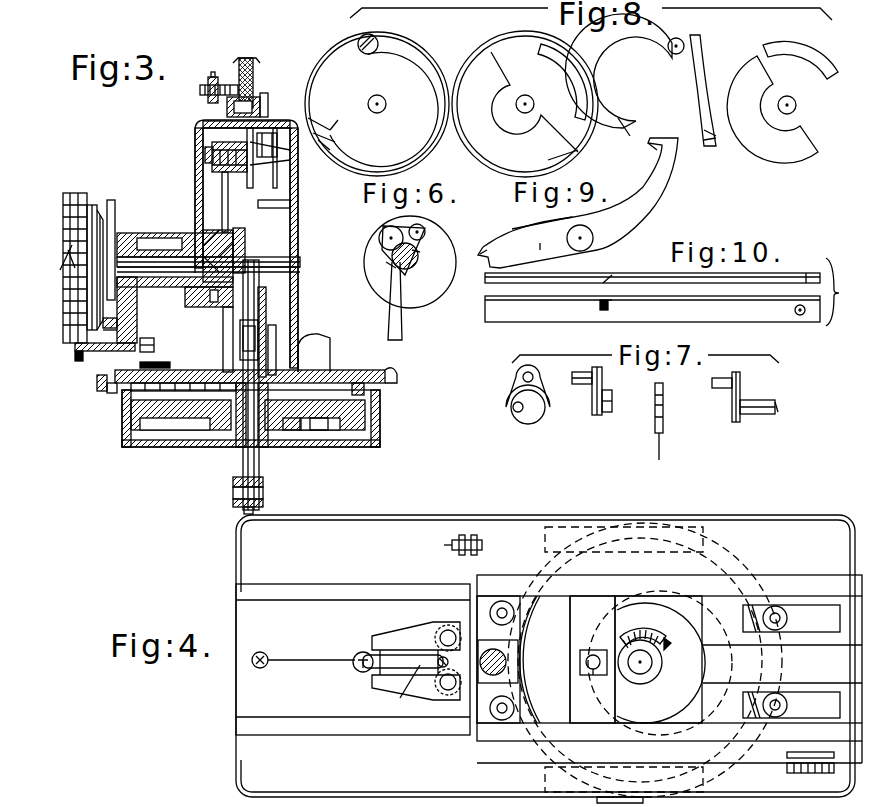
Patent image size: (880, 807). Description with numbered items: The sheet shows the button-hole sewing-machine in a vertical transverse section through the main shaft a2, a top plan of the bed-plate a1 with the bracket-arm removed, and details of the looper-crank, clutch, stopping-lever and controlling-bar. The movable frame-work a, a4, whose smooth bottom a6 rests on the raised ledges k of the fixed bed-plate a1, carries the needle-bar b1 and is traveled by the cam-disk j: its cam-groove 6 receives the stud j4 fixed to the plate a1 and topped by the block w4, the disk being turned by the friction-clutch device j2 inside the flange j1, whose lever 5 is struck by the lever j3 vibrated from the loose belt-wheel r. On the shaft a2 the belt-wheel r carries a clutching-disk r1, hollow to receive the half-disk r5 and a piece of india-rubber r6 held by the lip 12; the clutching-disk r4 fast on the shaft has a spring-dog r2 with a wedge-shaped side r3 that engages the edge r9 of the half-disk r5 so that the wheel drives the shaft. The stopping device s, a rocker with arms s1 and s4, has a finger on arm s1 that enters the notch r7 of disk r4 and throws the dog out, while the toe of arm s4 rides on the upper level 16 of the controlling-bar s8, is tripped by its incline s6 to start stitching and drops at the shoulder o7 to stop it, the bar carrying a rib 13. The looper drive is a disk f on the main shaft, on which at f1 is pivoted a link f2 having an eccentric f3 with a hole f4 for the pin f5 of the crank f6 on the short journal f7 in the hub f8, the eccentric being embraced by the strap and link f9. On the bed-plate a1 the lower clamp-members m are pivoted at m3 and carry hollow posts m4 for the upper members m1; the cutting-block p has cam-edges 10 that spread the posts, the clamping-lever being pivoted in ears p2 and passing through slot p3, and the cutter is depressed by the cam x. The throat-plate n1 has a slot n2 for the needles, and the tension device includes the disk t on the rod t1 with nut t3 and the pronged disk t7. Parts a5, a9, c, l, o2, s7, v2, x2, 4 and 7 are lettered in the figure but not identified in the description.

In FIG. 3, the main frame-work a is at (256, 246).
In FIG. 3, the bed-plate a1 is at (392, 376).
In FIG. 4, the bed-plate a1 is at (545, 659).
In FIG. 3, the main shaft a2 is at (208, 288).
In FIG. 3, the movable frame part a4 is at (145, 447).
In FIG. 3, the central spindle a5 is at (228, 440).
In FIG. 4, the central spindle a5 is at (656, 672).
In FIG. 3, the bottom part of frame a6 is at (96, 382).
In FIG. 4, the bottom part of frame a6 is at (503, 601).
In FIG. 4, the guide screw a9 is at (787, 618).
In FIG. 3, the needle-bar b1 is at (250, 73).
In FIG. 3, the gear shaft c is at (215, 190).
In FIG. 3, the hub block l is at (205, 232).
In FIG. 3, the disk f is at (222, 298).
In FIG. 6, the disk f is at (410, 262).
In FIG. 6, the pivot f1 is at (425, 232).
In FIG. 7, the link f2 is at (512, 386).
In FIG. 6, the link f2 is at (380, 236).
In FIG. 7, the eccentric f3 is at (520, 425).
In FIG. 6, the eccentric f3 is at (388, 264).
In FIG. 3, the hole f4 is at (266, 290).
In FIG. 7, the hole f4 is at (512, 408).
In FIG. 7, the pin f5 is at (712, 383).
In FIG. 3, the arm or crank f6 is at (252, 239).
In FIG. 7, the arm or crank f6 is at (742, 388).
In FIG. 6, the arm or crank f6 is at (392, 254).
In FIG. 7, the short journal f7 is at (784, 405).
In FIG. 6, the short journal f7 is at (418, 255).
In FIG. 3, the hub f8 is at (242, 218).
In FIG. 7, the eccentric strap and link f9 is at (663, 437).
In FIG. 6, the eccentric strap and link f9 is at (402, 336).
In FIG. 3, the cam-disk j is at (172, 440).
In FIG. 3, the flange j1 is at (118, 422).
In FIG. 4, the flange j1 is at (583, 659).
In FIG. 3, the friction-clutch device j2 is at (360, 383).
In FIG. 4, the friction-clutch device j2 is at (545, 659).
In FIG. 3, the lever j3 is at (113, 230).
In FIG. 4, the roller pin or stud j4 is at (592, 675).
In FIG. 4, the ledges k is at (820, 556).
In FIG. 4, the lower clamp members m is at (353, 659).
In FIG. 4, the upper clamp members m1 is at (416, 661).
In FIG. 4, the pivot m3 is at (255, 665).
In FIG. 4, the tubular hollow posts m4 is at (446, 630).
In FIG. 4, the throat-plate n1 is at (360, 668).
In FIG. 4, the slot n2 is at (357, 654).
In FIG. 3, the bracket o2 is at (280, 360).
In FIG. 10, the shoulder o7 is at (598, 326).
In FIG. 4, the cutting-block p is at (398, 685).
In FIG. 4, the ears p2 is at (470, 538).
In FIG. 4, the slot p3 is at (438, 545).
In FIG. 3, the belt-wheel r is at (92, 222).
In FIG. 3, the clutching-disk r1 is at (85, 193).
In FIG. 8, the clutching-disk r1 is at (525, 104).
In FIG. 8, the spring-dog r2 is at (322, 78).
In FIG. 8, the wedge-shaped side r3 is at (327, 120).
In FIG. 9, the wedge-shaped side r3 is at (542, 221).
In FIG. 3, the clutching-disk r4 is at (68, 193).
In FIG. 8, the clutching-disk r4 is at (377, 104).
In FIG. 8, the half-disk r5 is at (327, 142).
In FIG. 8, the india-rubber piece r6 is at (505, 47).
In FIG. 3, the notch r7 is at (59, 265).
In FIG. 8, the edge of half-disk r9 is at (560, 150).
In FIG. 3, the stopping device s is at (95, 351).
In FIG. 9, the stopping device s is at (586, 238).
In FIG. 3, the arm of stopping device s1 is at (170, 364).
In FIG. 9, the arm of stopping device s1 is at (662, 200).
In FIG. 3, the lever-arm s4 is at (158, 338).
In FIG. 9, the lever-arm s4 is at (539, 241).
In FIG. 10, the incline s6 is at (593, 297).
In FIG. 9, the hook s7 is at (477, 241).
In FIG. 10, the controlling-bar s8 is at (795, 298).
In FIG. 3, the tension disk t is at (238, 128).
In FIG. 3, the rod t1 is at (207, 88).
In FIG. 3, the nut t3 is at (213, 76).
In FIG. 3, the fellow disk t7 is at (253, 84).
In FIG. 9, the notch v2 is at (650, 155).
In FIG. 4, the block w4 is at (580, 662).
In FIG. 4, the cam x is at (663, 641).
In FIG. 3, the collar x2 is at (102, 321).
In FIG. 3, the spring 4 is at (318, 430).
In FIG. 3, the lever 5 is at (115, 395).
In FIG. 4, the cam-groove 6 is at (637, 606).
In FIG. 3, the roller 7 is at (292, 430).
In FIG. 4, the roller 7 is at (505, 658).
In FIG. 4, the cam-shaped edges 10 is at (410, 664).
In FIG. 8, the lip 12 is at (554, 82).
In FIG. 10, the rib 13 is at (485, 303).
In FIG. 10, the upper level 16 is at (652, 309).